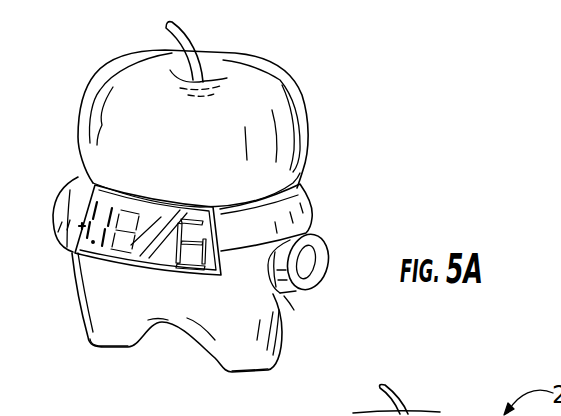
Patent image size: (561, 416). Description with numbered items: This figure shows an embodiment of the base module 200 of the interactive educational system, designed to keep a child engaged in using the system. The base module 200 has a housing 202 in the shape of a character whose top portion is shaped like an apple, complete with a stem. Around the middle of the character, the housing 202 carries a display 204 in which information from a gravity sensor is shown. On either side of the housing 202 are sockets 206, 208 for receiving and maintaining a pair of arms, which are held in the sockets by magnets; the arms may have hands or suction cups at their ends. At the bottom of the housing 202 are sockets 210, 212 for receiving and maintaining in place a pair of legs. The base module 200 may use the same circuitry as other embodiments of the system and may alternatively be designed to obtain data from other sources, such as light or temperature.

The base module 200 is at (343, 84).
The housing 202 is at (78, 118).
The display 204 is at (70, 252).
The socket 206 is at (55, 210).
The socket 208 is at (307, 261).
The socket 210 is at (110, 347).
The socket 212 is at (252, 372).